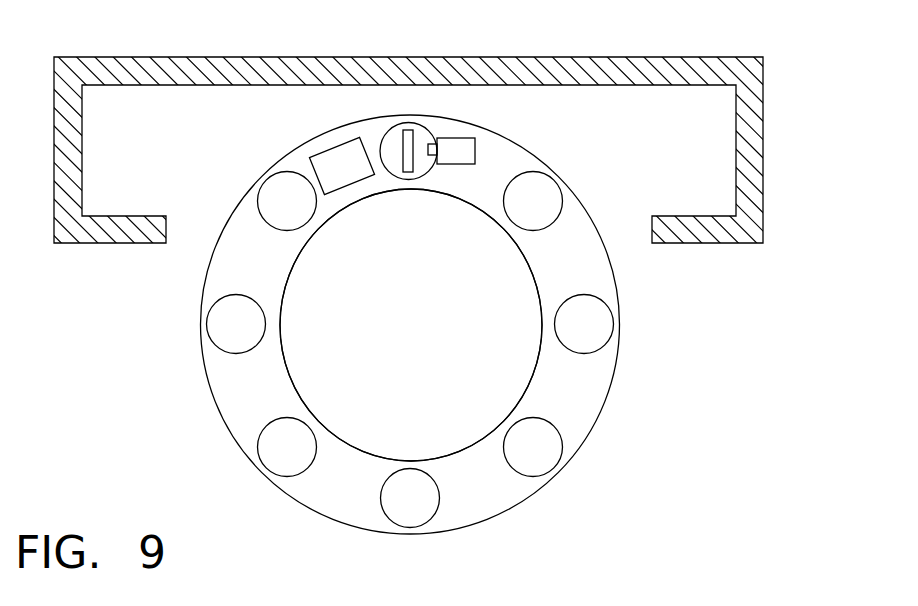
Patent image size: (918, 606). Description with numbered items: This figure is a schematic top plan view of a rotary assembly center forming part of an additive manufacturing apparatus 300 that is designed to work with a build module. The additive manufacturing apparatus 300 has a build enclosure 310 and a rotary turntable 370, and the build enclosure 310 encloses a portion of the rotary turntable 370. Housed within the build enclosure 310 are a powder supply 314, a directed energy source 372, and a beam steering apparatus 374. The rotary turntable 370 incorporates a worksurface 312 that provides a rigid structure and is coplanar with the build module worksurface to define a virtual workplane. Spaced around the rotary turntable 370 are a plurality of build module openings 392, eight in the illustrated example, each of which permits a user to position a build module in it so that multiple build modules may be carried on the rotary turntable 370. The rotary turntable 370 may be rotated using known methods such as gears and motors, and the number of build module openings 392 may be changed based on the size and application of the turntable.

The additive manufacturing apparatus 300 is at (697, 50).
The build enclosure 310 is at (135, 63).
The worksurface 312 is at (595, 272).
The powder supply 314 is at (341, 165).
The rotary turntable 370 is at (582, 403).
The directed energy source 372 is at (462, 153).
The beam steering apparatus 374 is at (407, 142).
The build module openings 392 is at (213, 336).